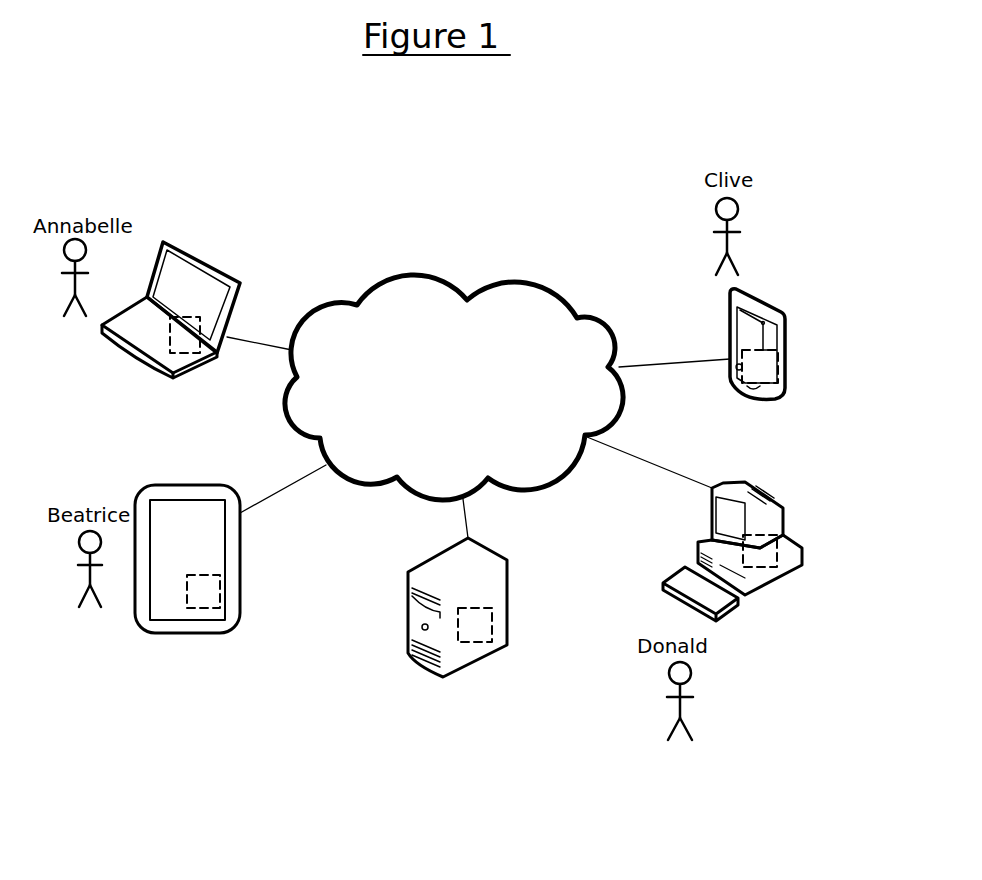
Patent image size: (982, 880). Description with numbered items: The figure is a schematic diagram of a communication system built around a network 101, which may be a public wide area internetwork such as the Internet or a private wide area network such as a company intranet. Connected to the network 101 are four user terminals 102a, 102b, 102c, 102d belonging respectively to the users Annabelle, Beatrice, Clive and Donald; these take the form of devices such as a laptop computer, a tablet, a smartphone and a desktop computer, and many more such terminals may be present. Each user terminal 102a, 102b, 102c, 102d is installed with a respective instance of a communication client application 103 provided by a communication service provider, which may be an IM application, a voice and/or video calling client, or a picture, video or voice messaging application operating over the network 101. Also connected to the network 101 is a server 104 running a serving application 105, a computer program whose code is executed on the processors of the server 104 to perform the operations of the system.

The network 101 is at (542, 285).
The user terminal 102a is at (140, 365).
The user terminal 102b is at (147, 633).
The user terminal 102c is at (757, 297).
The user terminal 102d is at (773, 500).
The communication client application 103 is at (197, 340).
The server 104 is at (507, 602).
The serving application 105 is at (480, 630).